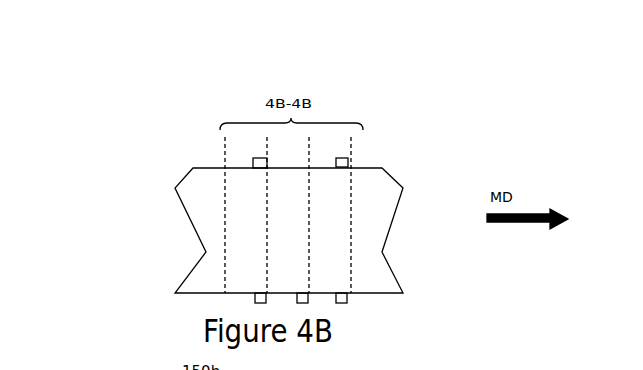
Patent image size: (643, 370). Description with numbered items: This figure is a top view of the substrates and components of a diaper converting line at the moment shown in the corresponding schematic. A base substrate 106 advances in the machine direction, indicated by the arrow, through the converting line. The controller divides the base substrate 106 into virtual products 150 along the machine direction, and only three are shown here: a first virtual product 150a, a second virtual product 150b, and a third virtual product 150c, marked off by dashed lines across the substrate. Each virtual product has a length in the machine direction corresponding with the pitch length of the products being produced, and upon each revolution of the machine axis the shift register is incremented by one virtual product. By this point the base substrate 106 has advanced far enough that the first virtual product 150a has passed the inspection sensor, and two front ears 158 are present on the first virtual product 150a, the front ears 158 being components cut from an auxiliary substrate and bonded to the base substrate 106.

The base substrate 106 is at (202, 278).
The virtual products 150 is at (276, 195).
The first virtual product 150a is at (333, 197).
The second virtual product 150b is at (282, 188).
The third virtual product 150c is at (240, 207).
The front ears 158 is at (253, 160).